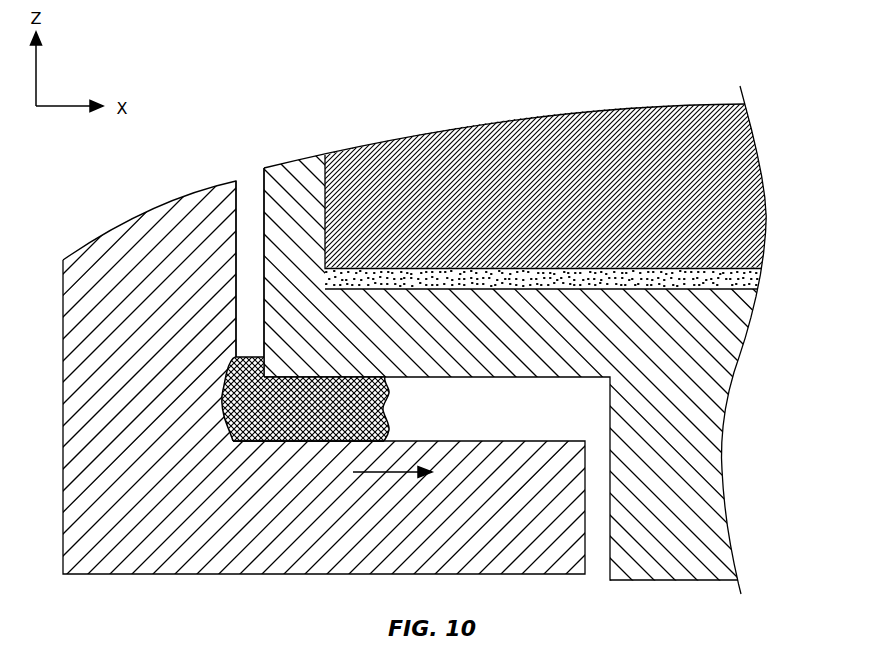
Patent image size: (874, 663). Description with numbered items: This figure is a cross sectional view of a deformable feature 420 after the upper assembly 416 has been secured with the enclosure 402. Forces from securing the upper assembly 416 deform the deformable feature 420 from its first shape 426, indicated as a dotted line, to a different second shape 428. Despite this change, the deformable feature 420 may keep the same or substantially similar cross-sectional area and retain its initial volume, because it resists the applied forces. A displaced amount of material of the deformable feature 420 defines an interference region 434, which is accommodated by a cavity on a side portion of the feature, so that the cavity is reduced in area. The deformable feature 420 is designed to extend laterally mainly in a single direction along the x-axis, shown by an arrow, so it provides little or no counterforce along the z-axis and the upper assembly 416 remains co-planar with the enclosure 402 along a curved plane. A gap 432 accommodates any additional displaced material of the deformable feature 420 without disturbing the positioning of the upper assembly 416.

The enclosure 402 is at (128, 338).
The upper assembly 416 is at (413, 81).
The deformable feature 420 is at (286, 420).
The first shape 426 is at (360, 418).
The second shape 428 is at (355, 410).
The gap 432 is at (264, 163).
The interference region 434 is at (227, 427).